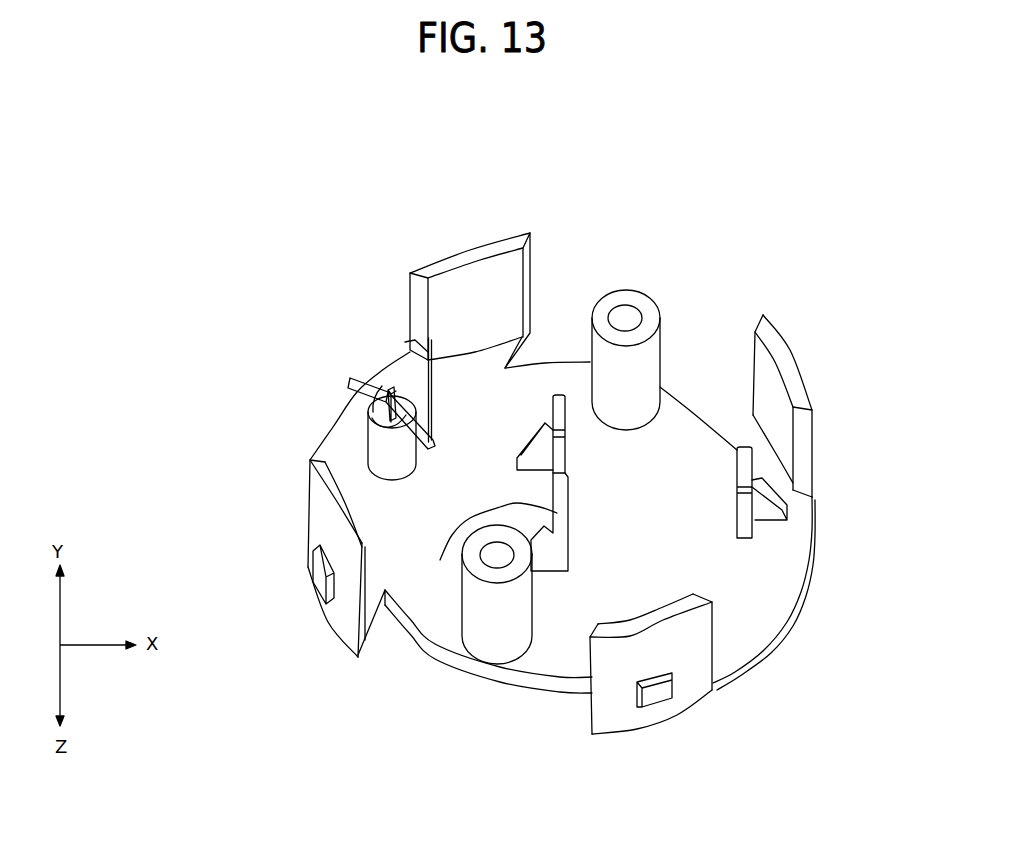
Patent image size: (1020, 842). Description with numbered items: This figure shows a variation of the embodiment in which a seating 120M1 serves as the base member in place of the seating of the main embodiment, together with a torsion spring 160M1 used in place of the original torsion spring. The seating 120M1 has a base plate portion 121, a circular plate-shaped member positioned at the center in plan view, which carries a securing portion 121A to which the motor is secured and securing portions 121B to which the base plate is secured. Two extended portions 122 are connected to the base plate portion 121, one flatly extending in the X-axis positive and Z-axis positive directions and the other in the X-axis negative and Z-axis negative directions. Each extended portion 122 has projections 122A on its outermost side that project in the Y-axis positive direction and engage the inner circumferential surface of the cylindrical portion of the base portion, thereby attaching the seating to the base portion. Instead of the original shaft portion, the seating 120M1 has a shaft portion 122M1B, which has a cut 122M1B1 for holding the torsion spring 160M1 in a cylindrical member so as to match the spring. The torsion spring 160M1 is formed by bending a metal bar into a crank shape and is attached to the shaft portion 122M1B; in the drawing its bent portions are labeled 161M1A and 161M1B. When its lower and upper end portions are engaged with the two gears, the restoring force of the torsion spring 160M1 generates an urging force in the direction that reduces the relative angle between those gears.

The seating 120M1 is at (789, 640).
The base plate portion 121 is at (547, 663).
The securing portion 121A is at (455, 540).
The securing portion 121B is at (632, 305).
The extended portion 122 is at (480, 358).
The projection 122A is at (467, 256).
The shaft portion 122M1B is at (380, 396).
The cut 122M1B1 is at (373, 438).
The torsion spring 160M1 is at (380, 380).
The arm bar 161M1A is at (353, 377).
The rod 161M1B is at (416, 348).